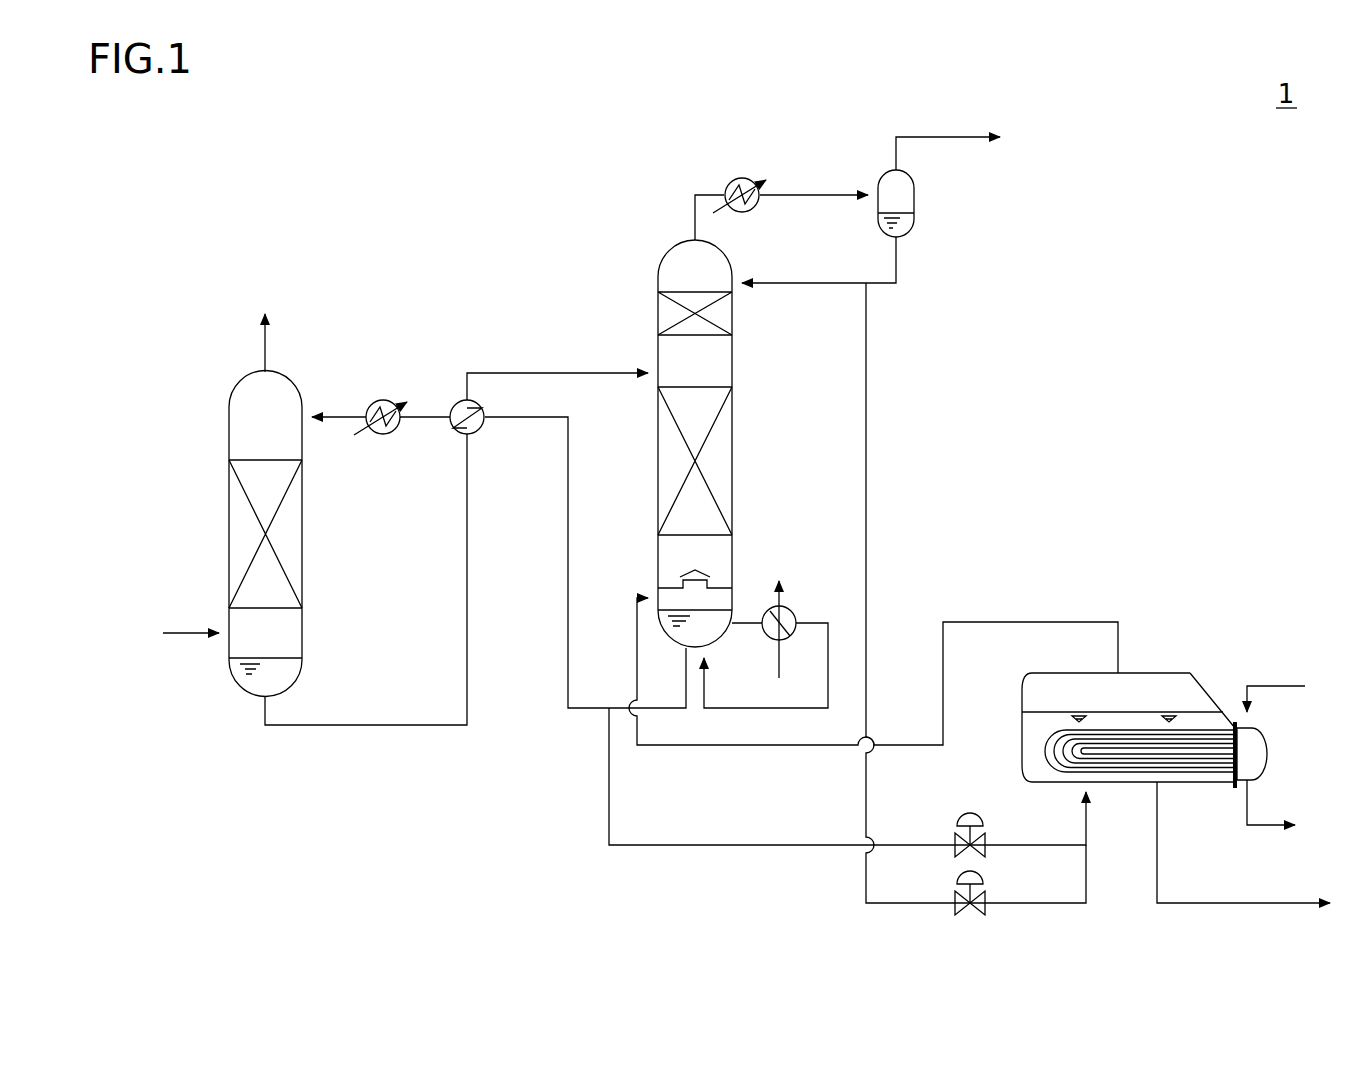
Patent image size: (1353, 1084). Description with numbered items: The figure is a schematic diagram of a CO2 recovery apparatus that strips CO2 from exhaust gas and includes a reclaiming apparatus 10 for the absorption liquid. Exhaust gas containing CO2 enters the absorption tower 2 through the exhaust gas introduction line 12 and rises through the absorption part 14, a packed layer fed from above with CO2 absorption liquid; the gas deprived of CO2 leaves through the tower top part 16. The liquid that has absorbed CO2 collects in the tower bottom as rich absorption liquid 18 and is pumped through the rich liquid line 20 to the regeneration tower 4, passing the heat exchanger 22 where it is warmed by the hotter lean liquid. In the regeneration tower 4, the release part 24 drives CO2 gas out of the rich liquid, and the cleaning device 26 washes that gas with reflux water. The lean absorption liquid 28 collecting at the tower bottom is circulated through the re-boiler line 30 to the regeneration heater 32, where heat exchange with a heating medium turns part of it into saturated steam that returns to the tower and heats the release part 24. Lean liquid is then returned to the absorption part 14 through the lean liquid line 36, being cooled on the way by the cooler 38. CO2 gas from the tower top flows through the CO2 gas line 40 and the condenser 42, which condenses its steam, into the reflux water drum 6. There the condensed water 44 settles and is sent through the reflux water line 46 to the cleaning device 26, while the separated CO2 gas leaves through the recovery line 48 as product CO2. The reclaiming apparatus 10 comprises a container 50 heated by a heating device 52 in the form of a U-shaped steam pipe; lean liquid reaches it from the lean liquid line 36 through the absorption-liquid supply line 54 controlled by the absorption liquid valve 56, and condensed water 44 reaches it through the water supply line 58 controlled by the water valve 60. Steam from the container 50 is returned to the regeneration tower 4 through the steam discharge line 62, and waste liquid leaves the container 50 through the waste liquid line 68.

The absorption tower 2 is at (296, 376).
The regeneration tower 4 is at (672, 249).
The reflux water drum 6 is at (915, 189).
The reclaiming apparatus 10 is at (1163, 714).
The exhaust gas introduction line 12 is at (186, 640).
The absorption part 14 is at (240, 531).
The tower top part 16 is at (263, 355).
The rich absorption liquid 18 is at (286, 677).
The rich liquid line 20 is at (372, 727).
The heat exchanger 22 is at (480, 432).
The release part 24 is at (668, 462).
The cleaning device 26 is at (668, 313).
The lean absorption liquid 28 is at (713, 647).
The re-boiler line 30 is at (830, 646).
The regeneration heater 32 is at (791, 609).
The lean liquid line 36 is at (570, 566).
The cooler 38 is at (385, 399).
The CO2 gas line 40 is at (693, 200).
The condenser 42 is at (742, 177).
The condensed water 44 is at (903, 230).
The reflux water line 46 is at (803, 285).
The recovery line 48 is at (961, 137).
The container 50 is at (1171, 673).
The heating device 52 is at (1195, 784).
The absorption-liquid supply line 54 is at (913, 845).
The absorption liquid valve 56 is at (976, 814).
The water supply line 58 is at (913, 904).
The water valve 60 is at (983, 876).
The steam discharge line 62 is at (1017, 622).
The waste liquid line 68 is at (1229, 904).